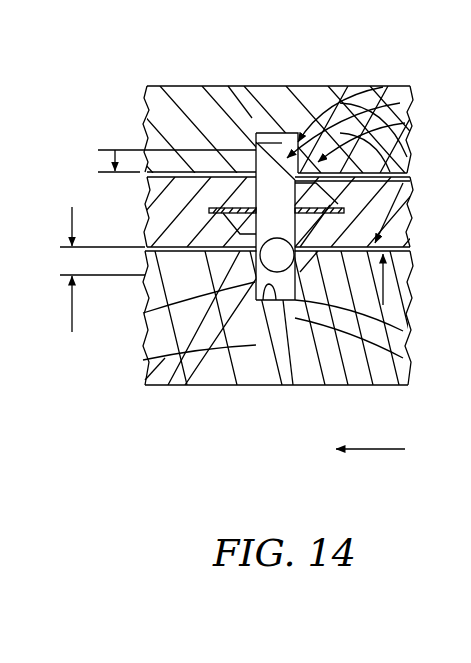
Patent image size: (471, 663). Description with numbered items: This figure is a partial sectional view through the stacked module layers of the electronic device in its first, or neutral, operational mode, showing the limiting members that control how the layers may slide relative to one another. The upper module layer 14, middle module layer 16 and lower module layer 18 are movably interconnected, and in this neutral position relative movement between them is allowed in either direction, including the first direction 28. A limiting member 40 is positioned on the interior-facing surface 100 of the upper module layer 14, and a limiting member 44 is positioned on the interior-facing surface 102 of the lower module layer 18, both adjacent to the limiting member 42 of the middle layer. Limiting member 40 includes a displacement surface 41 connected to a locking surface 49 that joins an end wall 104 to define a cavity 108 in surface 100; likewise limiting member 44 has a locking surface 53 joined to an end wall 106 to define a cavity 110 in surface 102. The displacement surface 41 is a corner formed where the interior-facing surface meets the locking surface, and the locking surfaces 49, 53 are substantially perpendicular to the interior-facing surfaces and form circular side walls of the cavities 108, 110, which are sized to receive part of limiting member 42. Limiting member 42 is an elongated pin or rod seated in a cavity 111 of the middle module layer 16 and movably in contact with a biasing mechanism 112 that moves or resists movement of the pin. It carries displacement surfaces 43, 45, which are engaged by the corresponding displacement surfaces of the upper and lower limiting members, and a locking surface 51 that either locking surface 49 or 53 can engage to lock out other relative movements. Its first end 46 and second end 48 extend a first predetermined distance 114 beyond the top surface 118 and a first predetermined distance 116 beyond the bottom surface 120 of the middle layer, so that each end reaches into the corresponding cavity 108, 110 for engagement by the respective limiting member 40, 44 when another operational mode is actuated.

The upper module layer 14 is at (168, 87).
The middle module layer 16 is at (144, 191).
The lower module layer 18 is at (197, 386).
The first direction 28 is at (380, 452).
The limiting member 40 is at (309, 119).
The displacement surface 41 is at (410, 90).
The limiting member 42 is at (259, 272).
The displacement surface 43 is at (384, 86).
The limiting member 44 is at (404, 358).
The displacement surface 45 is at (234, 244).
The first end 46 is at (273, 133).
The second end 48 is at (255, 294).
The locking surface 49 is at (240, 90).
The locking surface 51 is at (268, 199).
The locking surface 53 is at (404, 332).
The interior-facing surface 100 is at (405, 178).
The interior-facing surface 102 is at (403, 208).
The end wall 104 is at (290, 144).
The end wall 106 is at (263, 300).
The cavity 108 is at (357, 93).
The cavity 110 is at (280, 292).
The cavity 111 is at (220, 226).
The biasing mechanism 112 is at (406, 123).
The first predetermined distance 114 is at (110, 152).
The first predetermined distance 116 is at (71, 314).
The top surface 118 is at (386, 171).
The bottom surface 120 is at (393, 307).